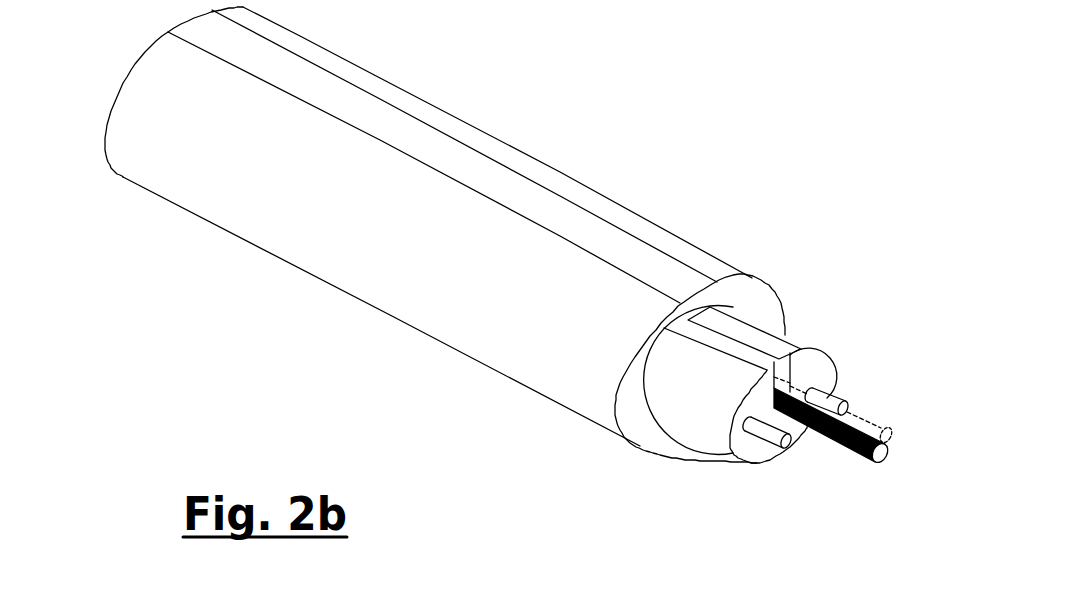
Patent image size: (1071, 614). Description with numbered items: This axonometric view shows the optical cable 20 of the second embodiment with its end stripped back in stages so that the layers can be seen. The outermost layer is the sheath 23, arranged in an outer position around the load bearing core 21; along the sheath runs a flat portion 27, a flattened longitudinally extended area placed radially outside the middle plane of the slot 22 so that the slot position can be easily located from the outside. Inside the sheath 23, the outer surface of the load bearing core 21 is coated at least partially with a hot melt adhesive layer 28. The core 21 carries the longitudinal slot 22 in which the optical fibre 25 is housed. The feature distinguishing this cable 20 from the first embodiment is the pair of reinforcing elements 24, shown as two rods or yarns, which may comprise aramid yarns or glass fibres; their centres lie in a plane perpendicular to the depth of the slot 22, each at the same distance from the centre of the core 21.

The cable 20 is at (188, 272).
The load bearing core 21 is at (832, 378).
The slot 22 is at (775, 364).
The sheath 23 is at (637, 385).
The reinforcing elements 24 is at (838, 405).
The optical fibre 25 is at (885, 454).
The flat portion 27 is at (590, 228).
The hot melt adhesive layer 28 is at (687, 424).